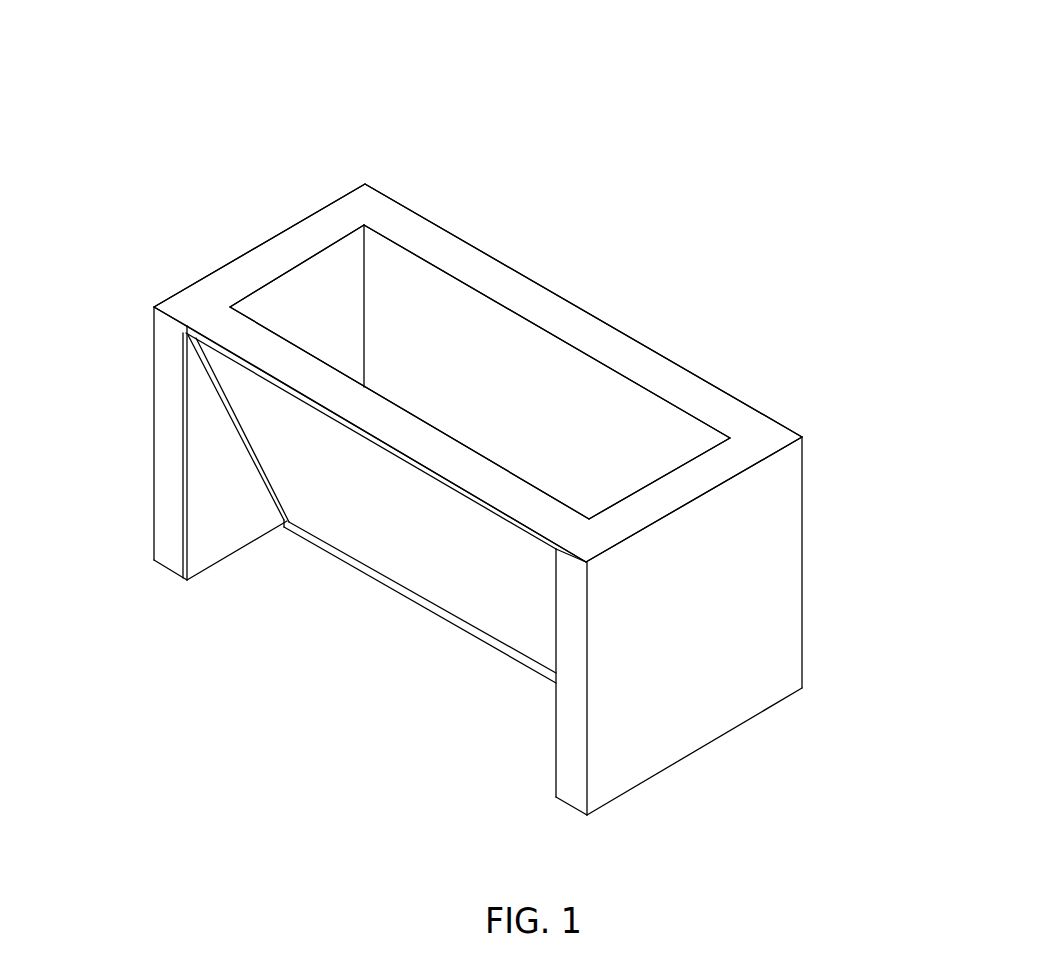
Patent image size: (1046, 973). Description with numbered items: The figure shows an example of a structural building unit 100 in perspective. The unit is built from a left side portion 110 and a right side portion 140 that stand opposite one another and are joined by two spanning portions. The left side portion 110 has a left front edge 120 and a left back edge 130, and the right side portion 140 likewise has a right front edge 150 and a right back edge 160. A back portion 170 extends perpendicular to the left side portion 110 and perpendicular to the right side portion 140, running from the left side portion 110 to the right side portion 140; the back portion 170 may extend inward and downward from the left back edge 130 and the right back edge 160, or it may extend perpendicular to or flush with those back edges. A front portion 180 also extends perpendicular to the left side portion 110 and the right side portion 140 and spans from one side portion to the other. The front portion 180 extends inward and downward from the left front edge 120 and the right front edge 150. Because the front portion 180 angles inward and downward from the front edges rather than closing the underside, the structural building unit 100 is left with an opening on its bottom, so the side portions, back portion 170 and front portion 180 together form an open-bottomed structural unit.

The structural building unit 100 is at (472, 26).
The left side portion 110 is at (243, 250).
The left front edge 120 is at (151, 357).
The left back edge 130 is at (366, 181).
The right side portion 140 is at (787, 547).
The right front edge 150 is at (582, 701).
The right back edge 160 is at (809, 456).
The back portion 170 is at (533, 282).
The front portion 180 is at (394, 551).